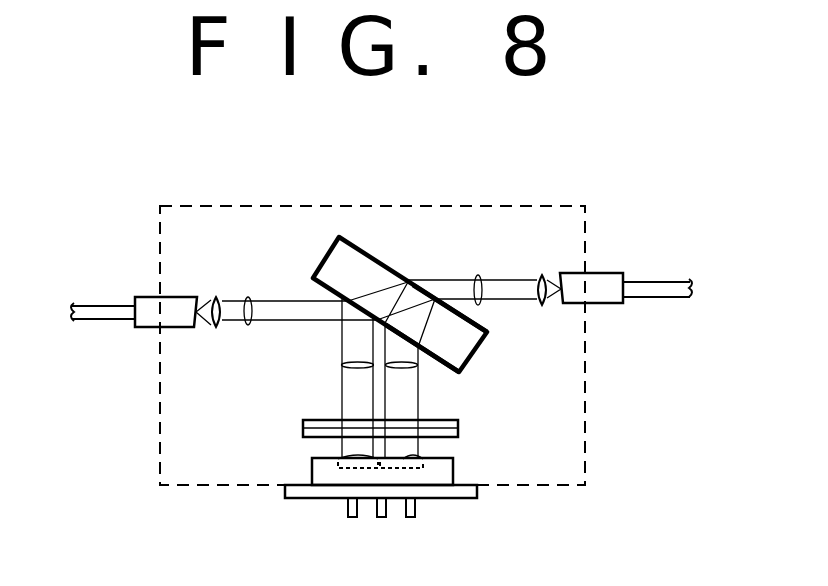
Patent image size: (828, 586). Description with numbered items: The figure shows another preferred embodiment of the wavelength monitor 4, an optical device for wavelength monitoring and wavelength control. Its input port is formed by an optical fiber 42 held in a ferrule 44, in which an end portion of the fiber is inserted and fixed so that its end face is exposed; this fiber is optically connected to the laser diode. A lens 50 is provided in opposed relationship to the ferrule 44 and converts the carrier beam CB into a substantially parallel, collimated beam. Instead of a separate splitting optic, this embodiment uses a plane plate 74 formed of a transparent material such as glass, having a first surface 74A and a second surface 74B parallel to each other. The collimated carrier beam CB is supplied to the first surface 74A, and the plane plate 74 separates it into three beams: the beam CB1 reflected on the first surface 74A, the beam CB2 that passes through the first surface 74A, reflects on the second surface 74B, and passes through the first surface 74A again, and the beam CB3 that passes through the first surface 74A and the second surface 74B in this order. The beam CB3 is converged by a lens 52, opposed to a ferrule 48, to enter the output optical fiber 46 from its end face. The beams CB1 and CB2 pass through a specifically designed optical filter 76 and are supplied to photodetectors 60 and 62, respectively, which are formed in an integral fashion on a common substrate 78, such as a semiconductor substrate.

The wavelength monitor 4 is at (498, 206).
The optical fiber 42 is at (92, 305).
The ferrule 44 is at (140, 297).
The lens 50 is at (217, 327).
The carrier beam CB is at (250, 297).
The plane plate 74 is at (475, 355).
The first surface 74A is at (443, 362).
The second surface 74B is at (478, 320).
The beam CB1 is at (342, 365).
The beam CB2 is at (402, 368).
The beam CB3 is at (478, 273).
The lens 52 is at (542, 273).
The ferrule 48 is at (609, 273).
The optical fiber 46 is at (667, 282).
The optical filter 76 is at (290, 419).
The photodetector 60 is at (338, 458).
The photodetector 62 is at (421, 458).
The common substrate 78 is at (435, 478).